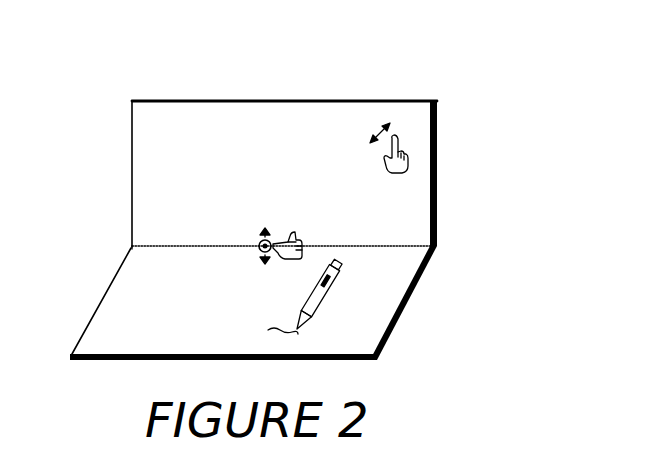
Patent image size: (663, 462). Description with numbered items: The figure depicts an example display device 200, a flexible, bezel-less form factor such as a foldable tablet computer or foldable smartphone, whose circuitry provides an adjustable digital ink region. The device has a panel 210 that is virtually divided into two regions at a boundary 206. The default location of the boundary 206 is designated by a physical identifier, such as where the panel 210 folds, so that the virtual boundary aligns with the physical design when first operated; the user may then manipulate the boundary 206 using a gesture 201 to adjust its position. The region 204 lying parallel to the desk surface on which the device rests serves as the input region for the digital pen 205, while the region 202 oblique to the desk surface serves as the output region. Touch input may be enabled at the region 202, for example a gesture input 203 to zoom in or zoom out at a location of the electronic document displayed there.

The display device 200 is at (265, 72).
The gesture 201 is at (295, 228).
The region 202 is at (192, 220).
The gesture input 203 is at (400, 131).
The region 204 is at (162, 336).
The digital pen 205 is at (323, 300).
The boundary 206 is at (150, 245).
The panel 210 is at (207, 100).